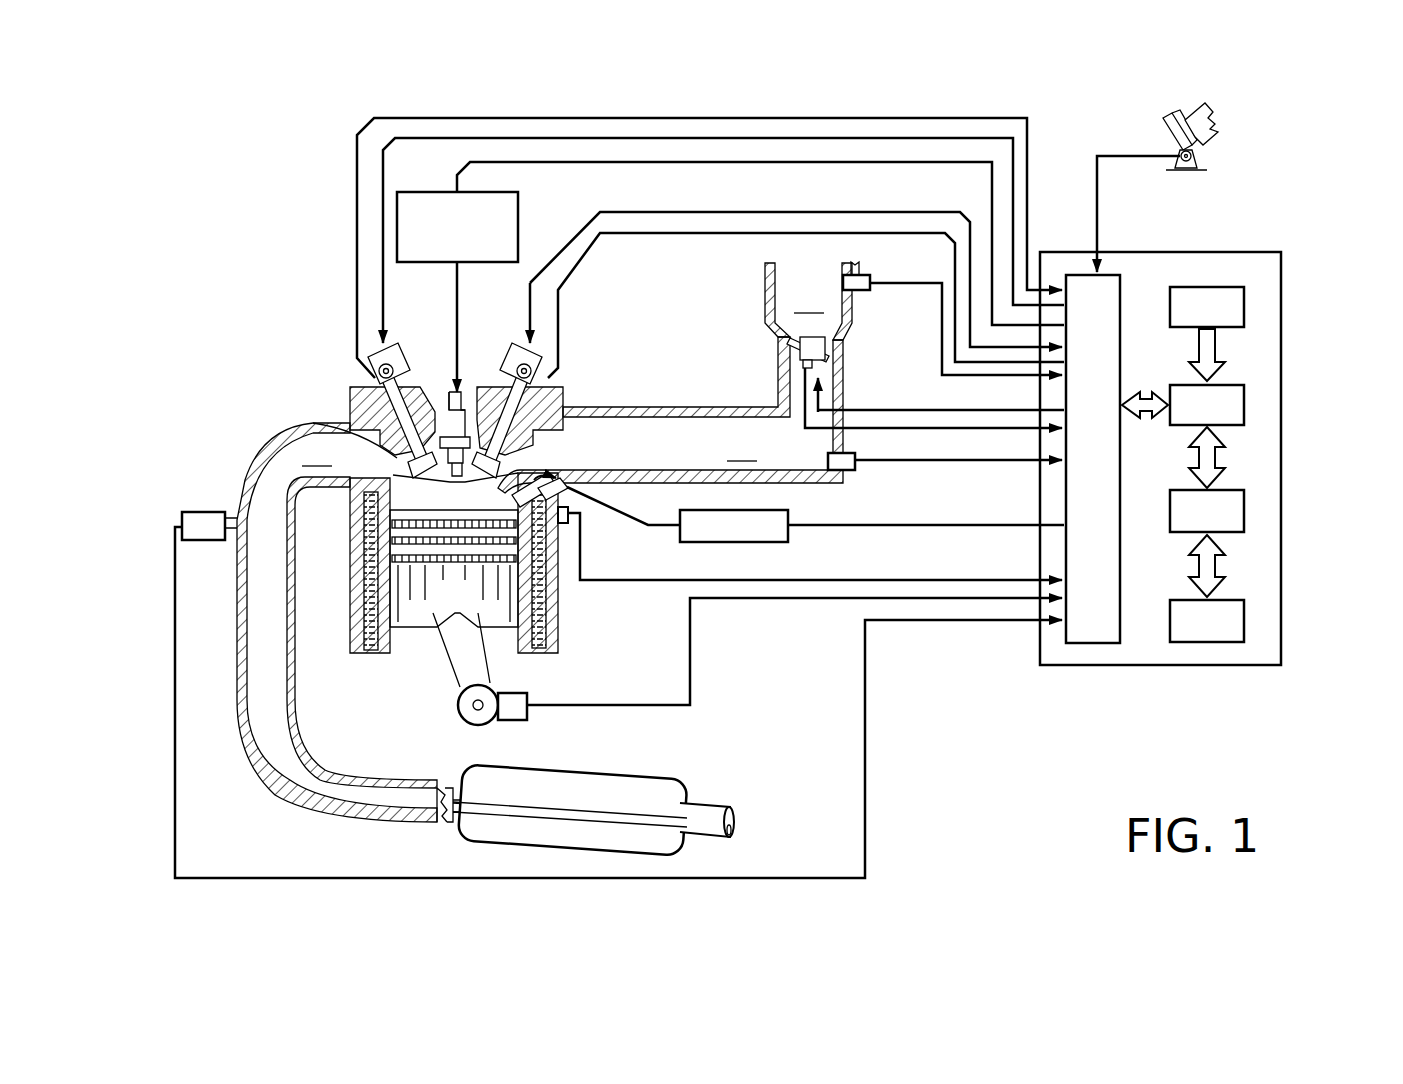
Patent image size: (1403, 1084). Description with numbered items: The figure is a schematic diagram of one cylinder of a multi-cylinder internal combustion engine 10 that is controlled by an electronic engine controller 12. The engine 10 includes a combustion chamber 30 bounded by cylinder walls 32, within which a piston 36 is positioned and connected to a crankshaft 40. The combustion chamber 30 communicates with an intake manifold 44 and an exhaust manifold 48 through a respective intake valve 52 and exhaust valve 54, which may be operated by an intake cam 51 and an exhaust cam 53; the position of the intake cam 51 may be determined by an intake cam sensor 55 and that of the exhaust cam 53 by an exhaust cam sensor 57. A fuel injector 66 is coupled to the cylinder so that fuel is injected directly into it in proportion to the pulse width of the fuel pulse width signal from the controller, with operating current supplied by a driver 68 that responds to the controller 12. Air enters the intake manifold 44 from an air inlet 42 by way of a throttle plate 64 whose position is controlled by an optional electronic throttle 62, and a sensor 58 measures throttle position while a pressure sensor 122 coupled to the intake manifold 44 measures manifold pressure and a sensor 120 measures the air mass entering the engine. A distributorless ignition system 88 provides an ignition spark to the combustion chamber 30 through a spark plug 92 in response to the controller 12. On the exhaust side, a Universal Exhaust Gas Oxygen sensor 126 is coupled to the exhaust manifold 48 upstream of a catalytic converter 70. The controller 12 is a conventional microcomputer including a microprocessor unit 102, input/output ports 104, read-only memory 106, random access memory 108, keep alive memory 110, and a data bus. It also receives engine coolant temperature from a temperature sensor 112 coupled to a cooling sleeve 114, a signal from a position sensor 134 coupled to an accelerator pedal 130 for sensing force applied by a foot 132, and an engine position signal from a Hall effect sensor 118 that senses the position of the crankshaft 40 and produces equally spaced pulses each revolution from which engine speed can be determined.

The internal combustion engine 10 is at (282, 338).
The electronic engine controller 12 is at (1270, 253).
The combustion chamber 30 is at (453, 492).
The cylinder walls 32 is at (398, 645).
The piston 36 is at (437, 597).
The crankshaft 40 is at (460, 740).
The air inlet 42 is at (808, 301).
The intake manifold 44 is at (670, 415).
The exhaust manifold 48 is at (345, 622).
The intake cam 51 is at (520, 350).
The intake valve 52 is at (513, 455).
The exhaust cam 53 is at (385, 352).
The exhaust valve 54 is at (405, 450).
The intake cam sensor 55 is at (545, 378).
The exhaust cam sensor 57 is at (375, 378).
The throttle position sensor 58 is at (798, 366).
The electronic throttle 62 is at (822, 345).
The throttle plate 64 is at (795, 345).
The fuel injector 66 is at (577, 487).
The driver 68 is at (705, 542).
The catalytic converter 70 is at (648, 778).
The distributorless ignition system 88 is at (405, 192).
The spark plug 92 is at (464, 398).
The microprocessor unit 102 is at (1245, 398).
The input/output ports 104 is at (1122, 281).
The read-only memory 106 is at (1245, 302).
The random access memory 108 is at (1245, 510).
The keep alive memory 110 is at (1245, 620).
The temperature sensor 112 is at (573, 518).
The cooling sleeve 114 is at (560, 612).
The Hall effect sensor 118 is at (520, 722).
The air mass sensor 120 is at (862, 273).
The pressure sensor 122 is at (850, 470).
The Universal Exhaust Gas Oxygen sensor 126 is at (182, 513).
The accelerator pedal 130 is at (1165, 130).
The foot 132 is at (1213, 114).
The position sensor 134 is at (1200, 157).